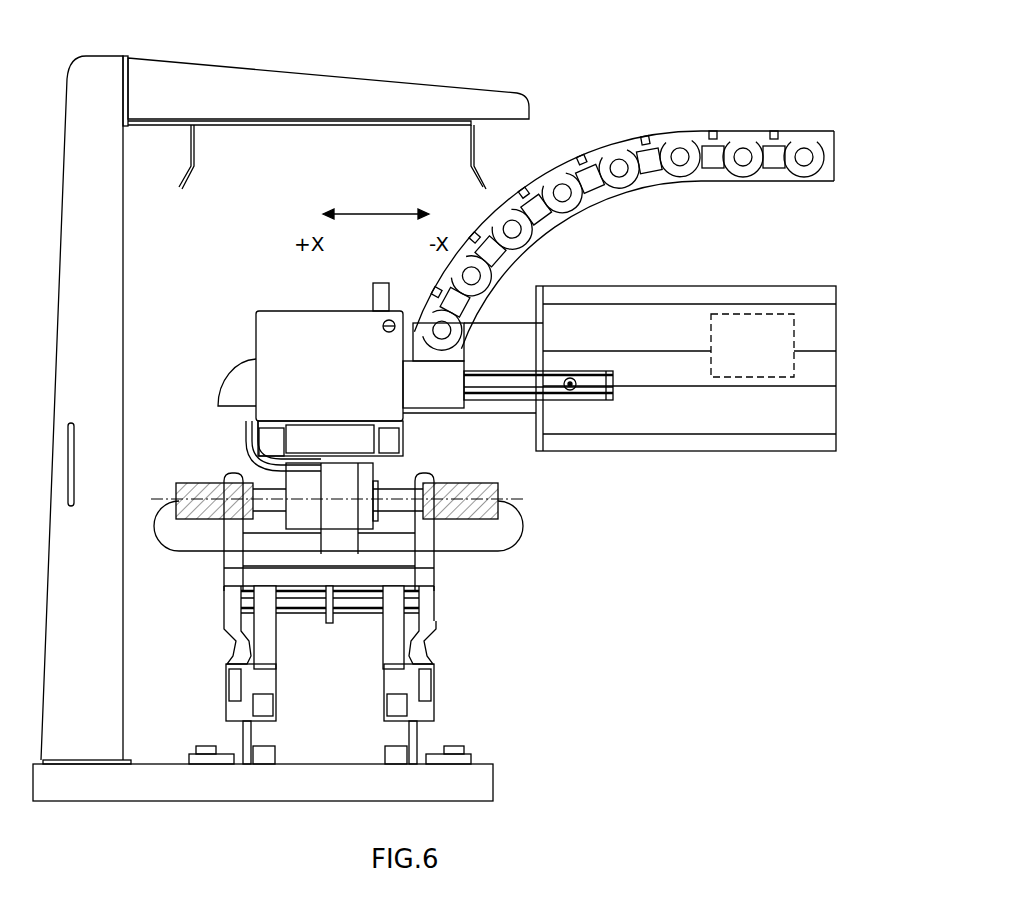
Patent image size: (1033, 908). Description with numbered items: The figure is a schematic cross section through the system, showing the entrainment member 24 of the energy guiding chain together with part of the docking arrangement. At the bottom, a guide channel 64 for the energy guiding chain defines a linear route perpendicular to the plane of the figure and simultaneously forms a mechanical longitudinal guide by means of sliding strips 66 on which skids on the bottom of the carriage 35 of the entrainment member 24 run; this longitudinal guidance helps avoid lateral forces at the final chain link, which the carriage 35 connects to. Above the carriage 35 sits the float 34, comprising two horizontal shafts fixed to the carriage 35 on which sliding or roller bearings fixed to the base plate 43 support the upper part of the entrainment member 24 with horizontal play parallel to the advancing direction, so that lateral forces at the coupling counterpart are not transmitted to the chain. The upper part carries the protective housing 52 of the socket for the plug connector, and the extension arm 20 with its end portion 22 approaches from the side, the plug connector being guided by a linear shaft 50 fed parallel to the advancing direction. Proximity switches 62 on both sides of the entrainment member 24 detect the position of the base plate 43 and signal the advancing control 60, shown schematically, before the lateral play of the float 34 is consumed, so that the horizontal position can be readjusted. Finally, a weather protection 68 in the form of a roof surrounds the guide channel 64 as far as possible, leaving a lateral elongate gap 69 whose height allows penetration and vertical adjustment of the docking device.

The extension arm 20 is at (805, 415).
The end portion 22 is at (270, 294).
The entrainment member 24 is at (462, 574).
The float 34 is at (303, 490).
The carriage 35 is at (262, 597).
The base plate 43 is at (272, 427).
The linear shaft 50 is at (585, 382).
The protective housing 52 is at (332, 322).
The advancing control 60 is at (767, 326).
The proximity switches 62 is at (183, 498).
The guide channel 64 is at (412, 701).
The sliding strips 66 is at (412, 650).
The weather protection 68 is at (328, 116).
The lateral elongate gap 69 is at (520, 151).